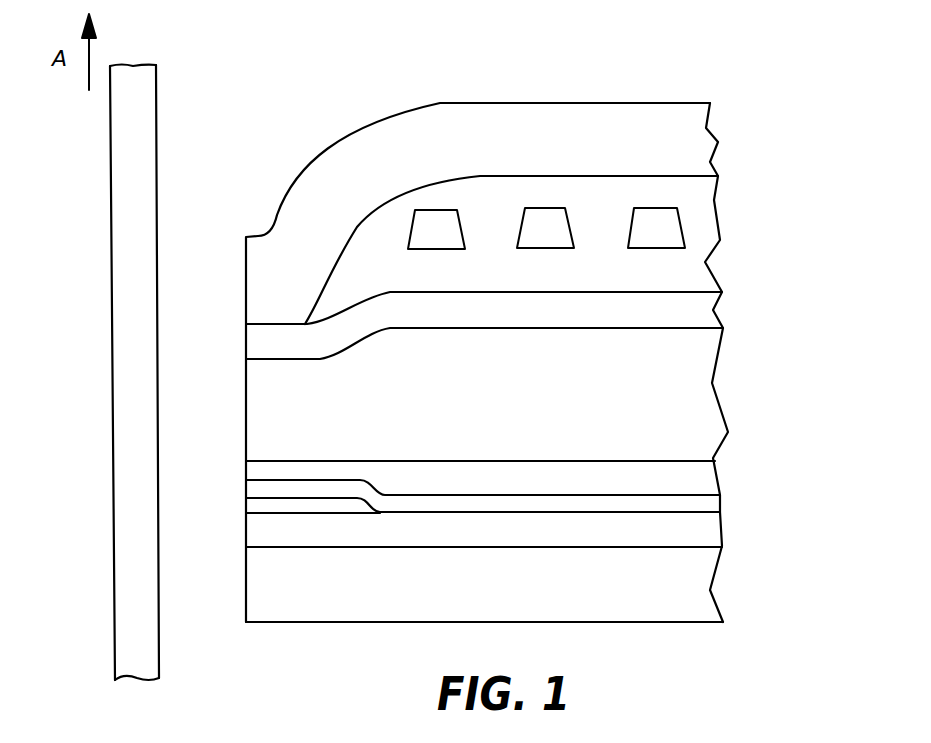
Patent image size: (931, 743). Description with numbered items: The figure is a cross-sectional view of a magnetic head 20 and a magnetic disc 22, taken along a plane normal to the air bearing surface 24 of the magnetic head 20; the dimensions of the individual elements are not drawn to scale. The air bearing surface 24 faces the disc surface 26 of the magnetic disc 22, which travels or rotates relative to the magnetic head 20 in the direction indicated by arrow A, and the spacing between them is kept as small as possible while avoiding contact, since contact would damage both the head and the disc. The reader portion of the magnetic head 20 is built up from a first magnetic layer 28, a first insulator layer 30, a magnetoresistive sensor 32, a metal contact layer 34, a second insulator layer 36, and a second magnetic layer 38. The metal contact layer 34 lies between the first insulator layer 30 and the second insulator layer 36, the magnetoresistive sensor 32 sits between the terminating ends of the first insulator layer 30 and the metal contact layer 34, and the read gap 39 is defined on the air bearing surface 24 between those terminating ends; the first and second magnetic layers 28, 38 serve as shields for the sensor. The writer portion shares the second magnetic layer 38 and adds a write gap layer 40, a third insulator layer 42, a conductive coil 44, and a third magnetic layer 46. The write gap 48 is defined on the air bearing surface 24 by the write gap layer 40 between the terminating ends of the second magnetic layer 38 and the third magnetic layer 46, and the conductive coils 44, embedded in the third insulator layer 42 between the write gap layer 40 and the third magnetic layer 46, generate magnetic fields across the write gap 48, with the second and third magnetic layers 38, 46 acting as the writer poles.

The magnetic head 20 is at (725, 107).
The magnetic disc 22 is at (148, 142).
The air bearing surface 24 is at (245, 265).
The disc surface 26 is at (157, 93).
The first magnetic layer 28 is at (675, 595).
The first insulator layer 30 is at (682, 545).
The magnetoresistive sensor 32 is at (298, 503).
The metal contact layer 34 is at (690, 506).
The second insulator layer 36 is at (681, 495).
The second magnetic layer 38 is at (668, 417).
The read gap 39 is at (239, 461).
The write gap layer 40 is at (668, 325).
The third insulator layer 42 is at (666, 286).
The conductive coil 44 is at (444, 231).
The third magnetic layer 46 is at (672, 155).
The write gap 48 is at (224, 290).